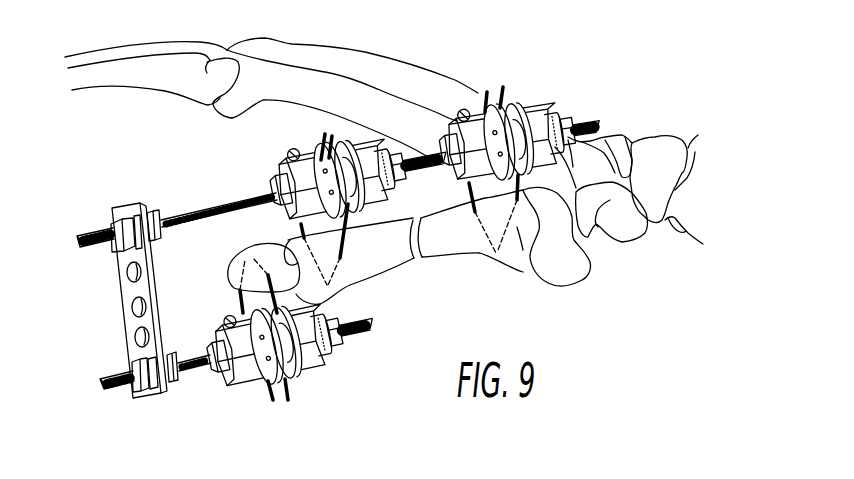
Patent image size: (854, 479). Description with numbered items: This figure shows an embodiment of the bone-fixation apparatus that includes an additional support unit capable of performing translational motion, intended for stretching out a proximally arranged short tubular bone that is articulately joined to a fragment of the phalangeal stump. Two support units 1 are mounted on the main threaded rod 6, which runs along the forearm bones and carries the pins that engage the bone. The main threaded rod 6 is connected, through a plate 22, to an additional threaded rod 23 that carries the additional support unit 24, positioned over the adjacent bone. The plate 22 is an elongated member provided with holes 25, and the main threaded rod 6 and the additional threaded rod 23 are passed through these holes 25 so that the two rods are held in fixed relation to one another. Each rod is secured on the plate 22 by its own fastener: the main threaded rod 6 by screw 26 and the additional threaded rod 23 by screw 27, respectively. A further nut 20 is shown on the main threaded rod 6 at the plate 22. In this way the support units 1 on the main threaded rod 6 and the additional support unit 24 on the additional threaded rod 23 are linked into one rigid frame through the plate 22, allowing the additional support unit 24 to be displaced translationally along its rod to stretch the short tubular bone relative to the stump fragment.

The support unit 1 is at (515, 100).
The main threaded rod 6 is at (87, 250).
The nut 20 is at (110, 223).
The plate 22 is at (118, 203).
The additional threaded rod 23 is at (108, 373).
The additional support unit 24 is at (323, 357).
The holes 25 is at (132, 306).
The screw 26 is at (155, 222).
The screw 27 is at (162, 380).